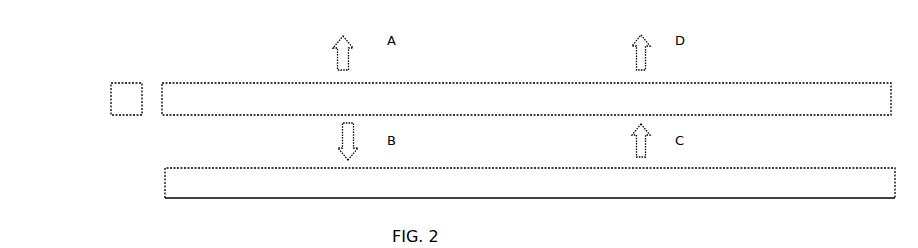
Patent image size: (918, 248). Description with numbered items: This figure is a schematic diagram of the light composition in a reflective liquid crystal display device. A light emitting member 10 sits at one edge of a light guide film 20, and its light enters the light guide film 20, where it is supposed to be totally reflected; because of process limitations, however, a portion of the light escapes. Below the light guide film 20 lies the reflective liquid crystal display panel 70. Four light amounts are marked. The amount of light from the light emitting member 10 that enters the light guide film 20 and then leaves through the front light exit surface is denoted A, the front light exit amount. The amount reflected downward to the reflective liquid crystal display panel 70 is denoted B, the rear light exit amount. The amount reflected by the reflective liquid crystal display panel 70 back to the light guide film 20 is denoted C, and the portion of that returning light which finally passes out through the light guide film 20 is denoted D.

The light emitting member 10 is at (127, 103).
The light guide film 20 is at (232, 100).
The reflective liquid crystal display panel 70 is at (181, 185).